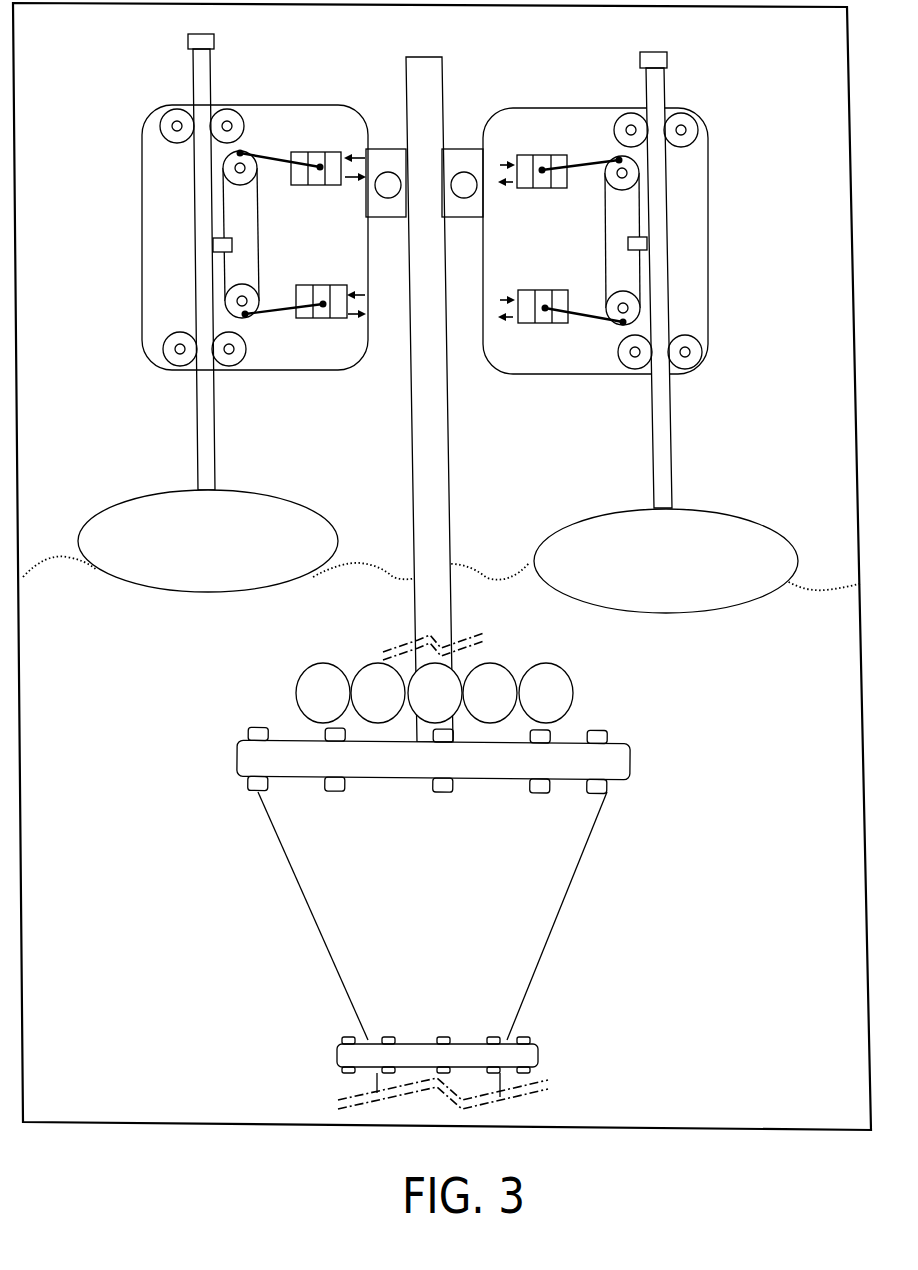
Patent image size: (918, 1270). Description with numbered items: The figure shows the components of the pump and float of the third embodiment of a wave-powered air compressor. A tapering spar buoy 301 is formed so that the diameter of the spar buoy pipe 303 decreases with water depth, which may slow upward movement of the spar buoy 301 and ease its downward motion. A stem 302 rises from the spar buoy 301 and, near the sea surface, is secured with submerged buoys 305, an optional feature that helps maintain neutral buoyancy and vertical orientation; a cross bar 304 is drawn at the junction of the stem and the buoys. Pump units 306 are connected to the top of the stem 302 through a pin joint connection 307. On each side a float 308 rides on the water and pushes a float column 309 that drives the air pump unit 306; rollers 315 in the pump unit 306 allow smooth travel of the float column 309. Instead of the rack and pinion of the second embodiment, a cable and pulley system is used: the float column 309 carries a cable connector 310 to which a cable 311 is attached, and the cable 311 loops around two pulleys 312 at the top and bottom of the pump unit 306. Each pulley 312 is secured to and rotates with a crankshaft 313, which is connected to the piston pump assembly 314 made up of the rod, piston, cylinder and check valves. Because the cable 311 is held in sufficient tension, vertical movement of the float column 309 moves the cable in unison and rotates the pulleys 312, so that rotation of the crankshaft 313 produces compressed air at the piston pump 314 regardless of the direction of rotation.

The spar buoy 301 is at (383, 950).
The stem 302 is at (407, 424).
The spar buoy pipe 303 is at (570, 870).
The upper cross bar 304 is at (615, 770).
The submerged buoys 305 is at (553, 710).
The pump unit 306 is at (595, 223).
The pin joint connection 307 is at (455, 172).
The float 308 is at (666, 561).
The float column 309 is at (673, 482).
The cable connector 310 is at (637, 243).
The cable 311 is at (642, 283).
The pulley 312 is at (637, 183).
The crankshaft 313 is at (627, 174).
The piston pump assembly 314 is at (530, 325).
The rollers 315 is at (692, 140).